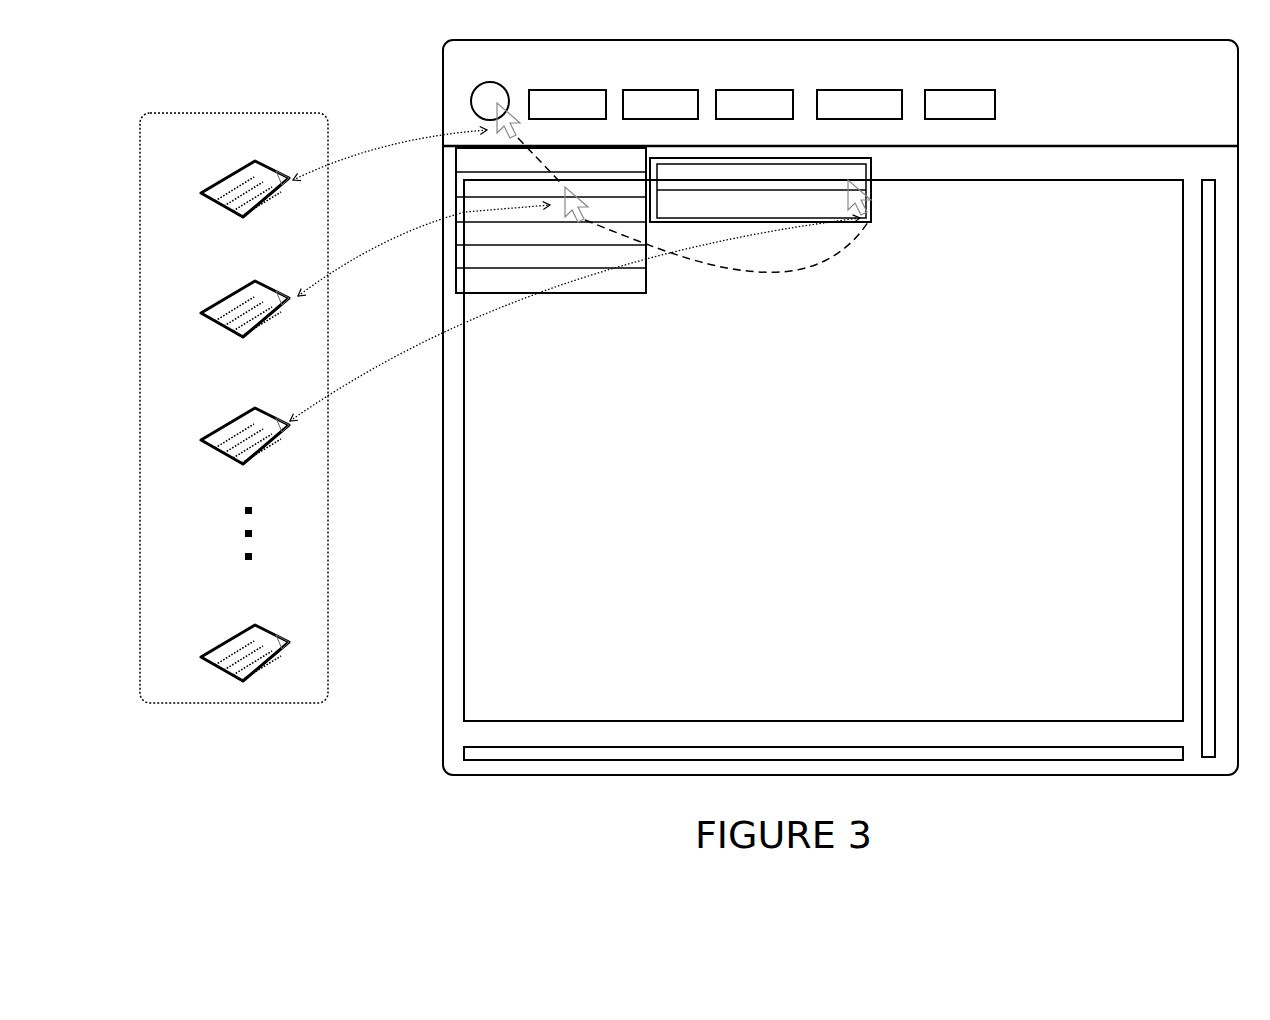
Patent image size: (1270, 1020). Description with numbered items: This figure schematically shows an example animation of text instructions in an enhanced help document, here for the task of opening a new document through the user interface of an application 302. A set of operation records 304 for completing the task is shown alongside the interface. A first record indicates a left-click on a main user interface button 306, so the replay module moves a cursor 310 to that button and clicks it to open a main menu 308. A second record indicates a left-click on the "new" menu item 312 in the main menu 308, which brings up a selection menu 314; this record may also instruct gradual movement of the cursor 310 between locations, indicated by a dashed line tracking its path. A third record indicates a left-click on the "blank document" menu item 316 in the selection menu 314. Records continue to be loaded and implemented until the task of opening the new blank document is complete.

The application 302 is at (450, 723).
The set of operation records 304 is at (262, 112).
The main user interface button 306 is at (474, 101).
The main menu 308 is at (543, 296).
The cursor 310 is at (514, 108).
The "new" menu item 312 is at (452, 188).
The selection menu 314 is at (805, 222).
The "blank document" menu item 316 is at (868, 178).